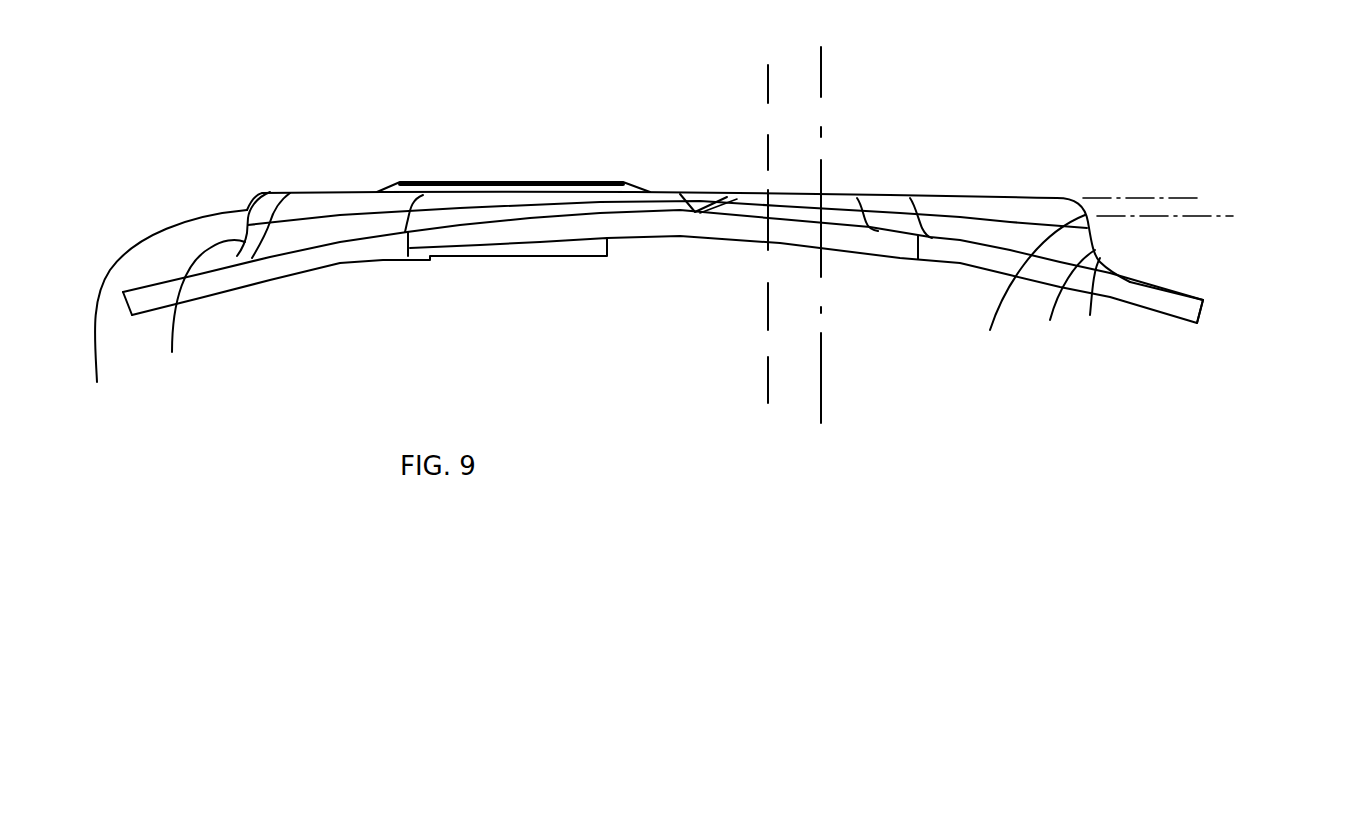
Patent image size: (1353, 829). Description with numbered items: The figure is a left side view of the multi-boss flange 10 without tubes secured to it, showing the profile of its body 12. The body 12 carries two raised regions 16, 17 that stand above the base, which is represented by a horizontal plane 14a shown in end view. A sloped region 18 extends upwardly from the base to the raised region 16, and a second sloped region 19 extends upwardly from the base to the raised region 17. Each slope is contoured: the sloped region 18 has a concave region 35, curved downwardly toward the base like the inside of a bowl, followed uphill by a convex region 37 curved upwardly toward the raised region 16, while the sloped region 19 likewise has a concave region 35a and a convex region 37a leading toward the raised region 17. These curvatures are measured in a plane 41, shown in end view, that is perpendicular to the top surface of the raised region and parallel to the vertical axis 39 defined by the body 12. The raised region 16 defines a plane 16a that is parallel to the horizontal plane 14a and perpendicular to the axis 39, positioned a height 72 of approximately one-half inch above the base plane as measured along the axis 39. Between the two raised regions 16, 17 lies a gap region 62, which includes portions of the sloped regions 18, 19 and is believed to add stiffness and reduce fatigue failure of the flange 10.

The multi-boss flange 10 is at (1133, 283).
The body 12 is at (667, 227).
The horizontal plane 14a is at (1213, 225).
The raised region 16 is at (990, 197).
The plane 16a is at (1170, 198).
The raised region 17 is at (323, 193).
The sloped region 18 is at (1090, 315).
The sloped region 19 is at (242, 258).
The concave region 35 is at (1060, 309).
The concave region 35a is at (195, 318).
The convex region 37 is at (1021, 291).
The convex region 37a is at (161, 318).
The vertical axis 39 is at (819, 75).
The plane 41 is at (767, 82).
The gap region 62 is at (697, 183).
The height 72 is at (1121, 247).